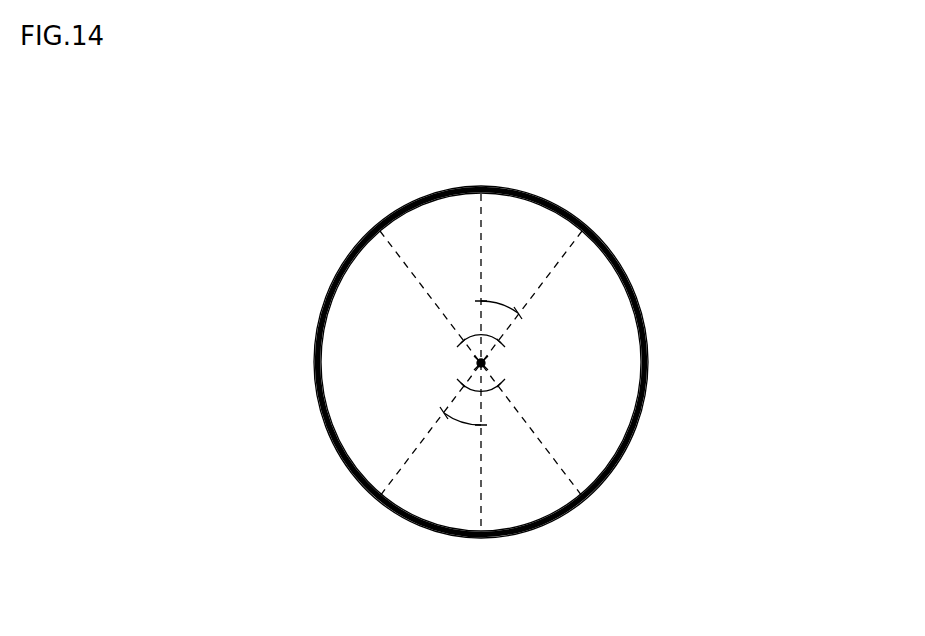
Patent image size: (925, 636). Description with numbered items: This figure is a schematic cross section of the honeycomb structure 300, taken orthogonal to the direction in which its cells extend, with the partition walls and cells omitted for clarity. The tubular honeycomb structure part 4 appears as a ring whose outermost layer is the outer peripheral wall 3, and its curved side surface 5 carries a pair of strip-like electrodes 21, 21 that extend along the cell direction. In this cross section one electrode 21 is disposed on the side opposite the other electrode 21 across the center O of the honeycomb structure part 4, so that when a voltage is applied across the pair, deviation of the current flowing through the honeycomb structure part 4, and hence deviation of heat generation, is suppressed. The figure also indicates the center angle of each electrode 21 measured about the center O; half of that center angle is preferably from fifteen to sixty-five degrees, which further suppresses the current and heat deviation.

The honeycomb structure 300 is at (890, 94).
The honeycomb structure part 4 is at (650, 355).
The electrode 21 is at (513, 190).
The side surface 5 is at (358, 478).
The outer peripheral wall 3 is at (575, 485).
The center O is at (485, 365).